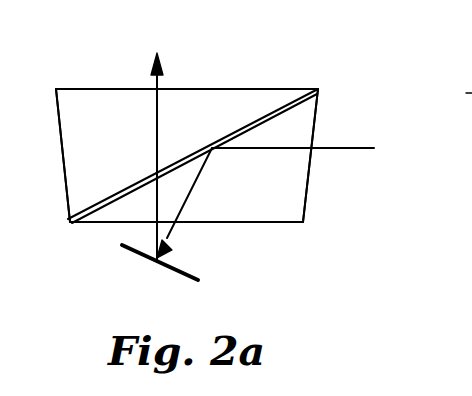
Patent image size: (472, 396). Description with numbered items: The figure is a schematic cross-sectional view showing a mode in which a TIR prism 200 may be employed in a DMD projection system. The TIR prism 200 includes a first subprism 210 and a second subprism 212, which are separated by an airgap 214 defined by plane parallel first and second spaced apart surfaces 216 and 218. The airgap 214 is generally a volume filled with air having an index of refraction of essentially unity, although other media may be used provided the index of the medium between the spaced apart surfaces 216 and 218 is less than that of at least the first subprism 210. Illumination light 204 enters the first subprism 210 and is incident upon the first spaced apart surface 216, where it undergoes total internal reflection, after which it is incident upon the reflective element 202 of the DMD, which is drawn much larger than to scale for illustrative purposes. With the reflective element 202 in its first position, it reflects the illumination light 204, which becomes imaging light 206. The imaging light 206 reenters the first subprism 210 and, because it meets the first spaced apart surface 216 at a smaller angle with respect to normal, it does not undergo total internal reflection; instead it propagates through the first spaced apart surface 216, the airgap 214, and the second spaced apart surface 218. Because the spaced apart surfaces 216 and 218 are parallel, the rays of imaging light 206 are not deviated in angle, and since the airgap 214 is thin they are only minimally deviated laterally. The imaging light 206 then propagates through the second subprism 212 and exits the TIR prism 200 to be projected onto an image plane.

The TIR prism 200 is at (265, 77).
The reflective element 202 is at (182, 277).
The illumination light 204 is at (353, 147).
The imaging light 206 is at (160, 117).
The first subprism 210 is at (296, 190).
The second subprism 212 is at (102, 98).
The airgap 214 is at (68, 220).
The first spaced apart surface 216 is at (100, 223).
The second spaced apart surface 218 is at (103, 203).